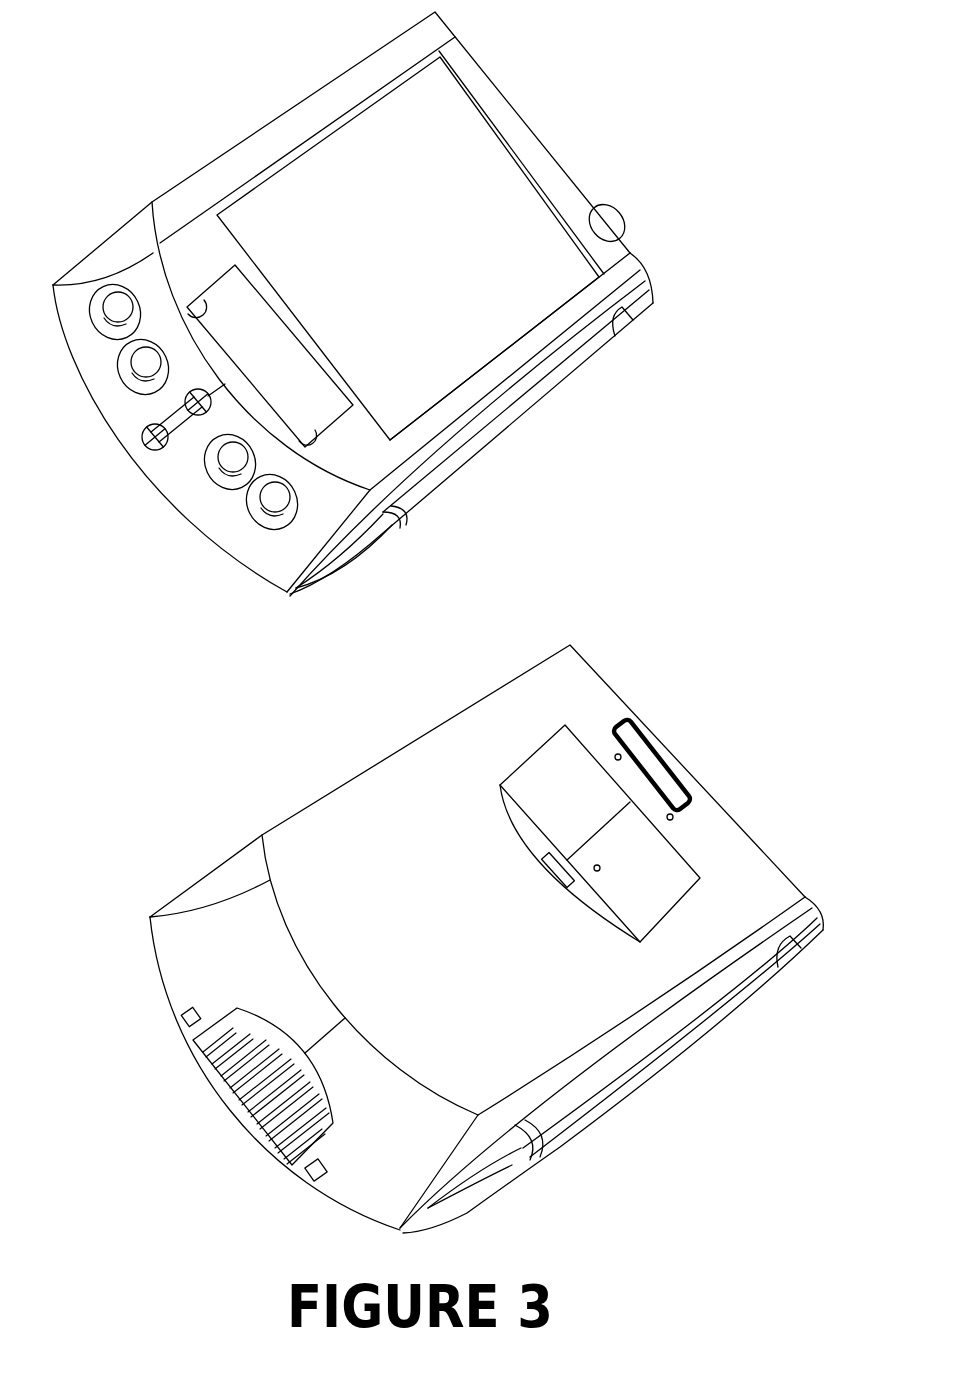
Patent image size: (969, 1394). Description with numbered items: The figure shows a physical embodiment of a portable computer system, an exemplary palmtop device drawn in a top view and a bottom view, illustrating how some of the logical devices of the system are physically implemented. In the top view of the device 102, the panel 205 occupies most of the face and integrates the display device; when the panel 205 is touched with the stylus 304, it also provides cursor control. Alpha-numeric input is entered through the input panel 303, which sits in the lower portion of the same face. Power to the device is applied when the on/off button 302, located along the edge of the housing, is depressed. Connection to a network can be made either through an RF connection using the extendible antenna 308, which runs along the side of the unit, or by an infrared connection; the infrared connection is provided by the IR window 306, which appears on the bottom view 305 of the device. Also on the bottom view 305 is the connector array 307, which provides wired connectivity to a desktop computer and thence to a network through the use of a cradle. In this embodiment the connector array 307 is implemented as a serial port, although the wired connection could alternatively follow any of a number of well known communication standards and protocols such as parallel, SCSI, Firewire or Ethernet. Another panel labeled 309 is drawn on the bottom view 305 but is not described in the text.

The device 102 is at (268, 118).
The panel 205 is at (427, 247).
The on/off button 302 is at (624, 218).
The input panel 303 is at (292, 364).
The stylus 304 is at (543, 393).
The bottom view 305 is at (472, 968).
The IR window 306 is at (673, 745).
The connector array 307 is at (235, 1108).
The extendible antenna 308 is at (633, 1057).
The battery door 309 is at (660, 895).